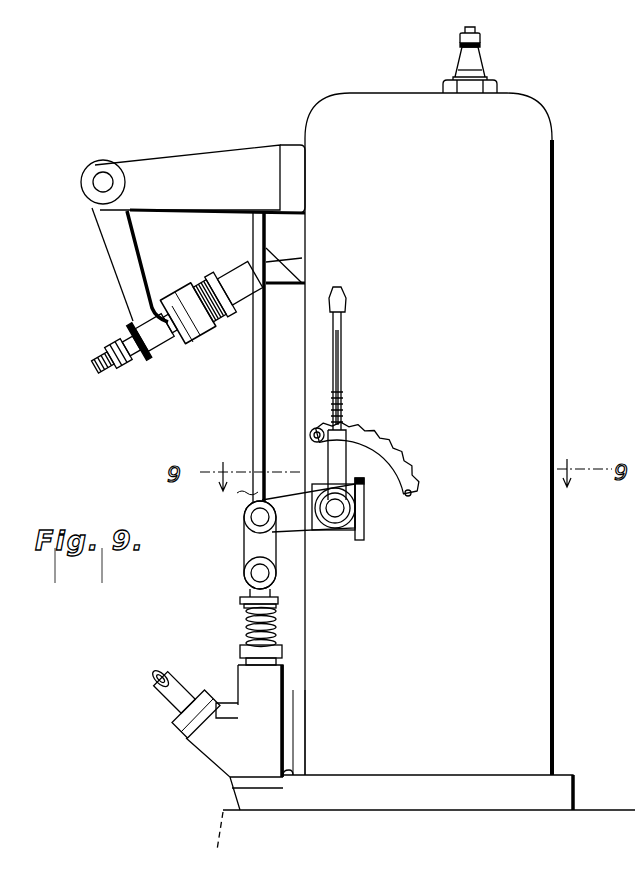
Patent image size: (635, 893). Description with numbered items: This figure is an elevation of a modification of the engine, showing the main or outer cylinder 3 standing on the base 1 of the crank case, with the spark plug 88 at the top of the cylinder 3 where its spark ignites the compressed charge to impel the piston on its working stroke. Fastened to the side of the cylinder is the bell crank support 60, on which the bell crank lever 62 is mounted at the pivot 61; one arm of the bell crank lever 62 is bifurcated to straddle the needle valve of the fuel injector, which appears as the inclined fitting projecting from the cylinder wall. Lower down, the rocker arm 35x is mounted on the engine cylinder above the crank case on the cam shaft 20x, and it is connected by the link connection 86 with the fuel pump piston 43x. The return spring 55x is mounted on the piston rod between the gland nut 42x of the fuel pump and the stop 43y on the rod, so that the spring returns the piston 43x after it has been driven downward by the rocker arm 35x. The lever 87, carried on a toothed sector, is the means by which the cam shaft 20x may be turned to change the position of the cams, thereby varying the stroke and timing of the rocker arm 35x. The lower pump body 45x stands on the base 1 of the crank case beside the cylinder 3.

The base 1 is at (426, 770).
The tank 3 is at (428, 434).
The fitting 88 is at (453, 51).
The arm 60 is at (200, 179).
The pivot 61 is at (107, 161).
The rod 62 is at (117, 253).
The toothed sector 87 is at (345, 446).
The lever pivot 20x is at (336, 524).
The link 35x is at (248, 492).
The link 86 is at (244, 545).
The spring plate 43y is at (278, 600).
The spring seat 55x is at (243, 602).
The spring 43x is at (245, 619).
The cylinder 42x is at (283, 652).
The branch pipe 45x is at (207, 743).